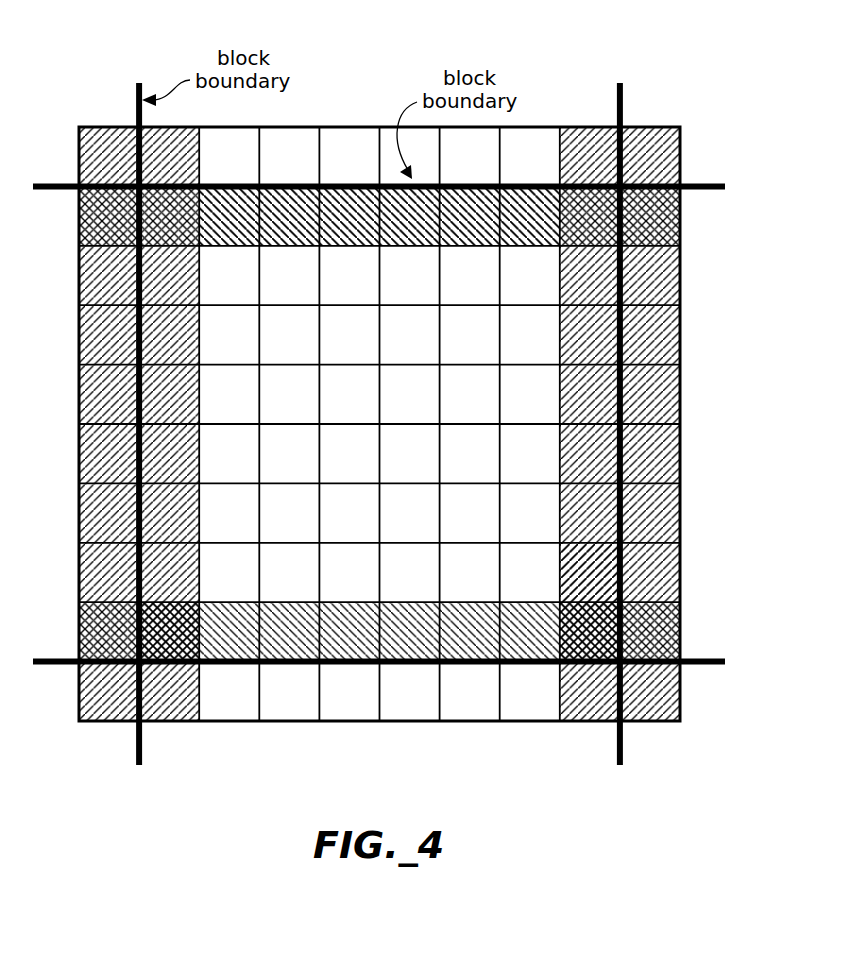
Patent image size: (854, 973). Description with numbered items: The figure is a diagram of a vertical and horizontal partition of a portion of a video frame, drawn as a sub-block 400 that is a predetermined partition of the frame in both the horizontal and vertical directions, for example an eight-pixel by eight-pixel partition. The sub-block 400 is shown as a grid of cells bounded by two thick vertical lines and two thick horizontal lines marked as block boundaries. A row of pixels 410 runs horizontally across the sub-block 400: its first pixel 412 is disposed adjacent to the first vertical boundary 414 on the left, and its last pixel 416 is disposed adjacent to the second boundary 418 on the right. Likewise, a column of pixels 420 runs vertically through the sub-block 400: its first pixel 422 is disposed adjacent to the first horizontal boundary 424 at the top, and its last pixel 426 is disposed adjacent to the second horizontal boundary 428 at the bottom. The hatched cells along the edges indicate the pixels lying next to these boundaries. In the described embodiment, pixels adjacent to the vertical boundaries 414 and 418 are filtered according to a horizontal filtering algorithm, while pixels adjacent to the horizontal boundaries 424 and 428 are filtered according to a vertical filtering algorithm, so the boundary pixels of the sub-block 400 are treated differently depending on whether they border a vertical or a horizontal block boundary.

The sub-block 400 is at (706, 58).
The row of pixels 410 is at (578, 737).
The first pixel 412 is at (167, 648).
The first vertical boundary 414 is at (135, 747).
The last pixel 416 is at (583, 648).
The second boundary 418 is at (623, 753).
The column of pixels 420 is at (715, 228).
The first pixel 422 is at (683, 218).
The first horizontal boundary 424 is at (700, 184).
The last pixel 426 is at (595, 632).
The second horizontal boundary 428 is at (710, 664).